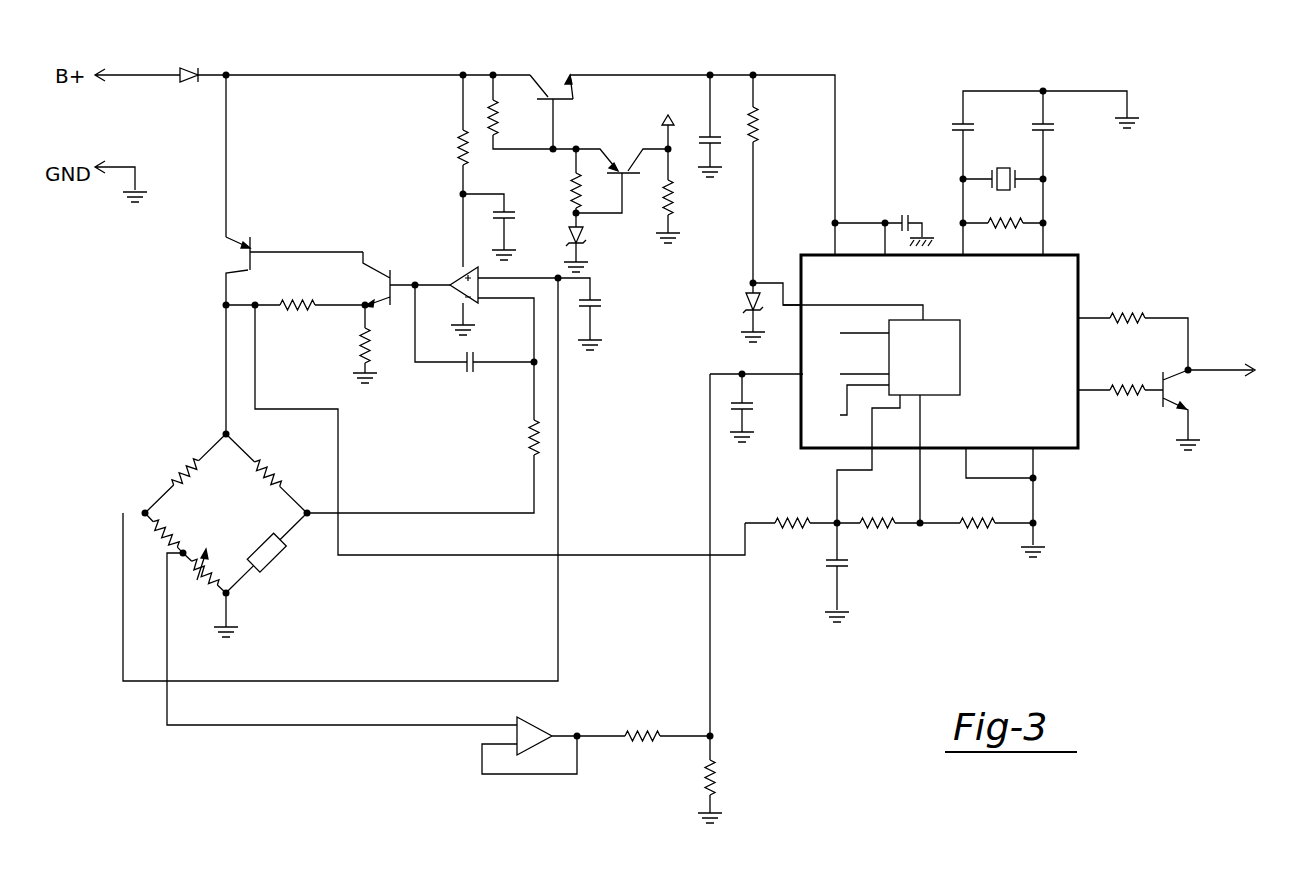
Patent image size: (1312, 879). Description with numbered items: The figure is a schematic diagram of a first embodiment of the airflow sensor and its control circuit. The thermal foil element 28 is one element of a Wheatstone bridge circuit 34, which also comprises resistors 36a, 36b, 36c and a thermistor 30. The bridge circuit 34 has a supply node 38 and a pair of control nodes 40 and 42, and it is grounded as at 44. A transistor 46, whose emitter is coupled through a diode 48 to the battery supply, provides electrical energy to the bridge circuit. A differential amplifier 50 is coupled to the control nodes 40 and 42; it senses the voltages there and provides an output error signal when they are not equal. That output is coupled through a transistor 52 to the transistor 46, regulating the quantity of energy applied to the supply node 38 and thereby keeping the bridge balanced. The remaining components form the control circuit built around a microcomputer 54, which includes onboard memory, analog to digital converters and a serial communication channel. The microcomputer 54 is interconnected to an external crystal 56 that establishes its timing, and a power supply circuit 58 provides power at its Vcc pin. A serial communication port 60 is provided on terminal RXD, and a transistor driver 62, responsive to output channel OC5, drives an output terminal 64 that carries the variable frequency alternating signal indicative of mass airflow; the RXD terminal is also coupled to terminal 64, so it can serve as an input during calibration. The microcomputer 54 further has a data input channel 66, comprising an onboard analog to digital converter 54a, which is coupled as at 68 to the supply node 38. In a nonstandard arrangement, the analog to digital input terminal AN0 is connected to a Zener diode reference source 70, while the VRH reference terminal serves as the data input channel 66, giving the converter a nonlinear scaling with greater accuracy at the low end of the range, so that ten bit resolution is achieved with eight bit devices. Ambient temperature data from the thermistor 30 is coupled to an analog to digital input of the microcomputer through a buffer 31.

The thermal foil element 28 is at (290, 570).
The thermistor 30 is at (205, 575).
The buffer 31 is at (579, 735).
The Wheatstone bridge circuit 34 is at (217, 508).
The resistor 36a is at (275, 472).
The resistor 36b is at (195, 468).
The resistor 36c is at (172, 540).
The supply node 38 is at (230, 434).
The control node 40 is at (144, 511).
The control node 42 is at (312, 511).
The ground 44 is at (232, 597).
The transistor 46 is at (251, 251).
The diode 48 is at (185, 80).
The differential amplifier 50 is at (451, 284).
The transistor 52 is at (392, 268).
The microcomputer circuit 54 is at (985, 366).
The analog to digital converter 54a is at (924, 357).
The external crystal 56 is at (1020, 178).
The power supply circuit 58 is at (587, 142).
The serial communication port 60 is at (1085, 318).
The transistor driver 62 is at (1160, 378).
The output terminal 64 is at (1230, 374).
The data input channel 66 is at (838, 475).
The coupling to supply node 68 is at (266, 305).
The Zener diode reference source 70 is at (745, 294).